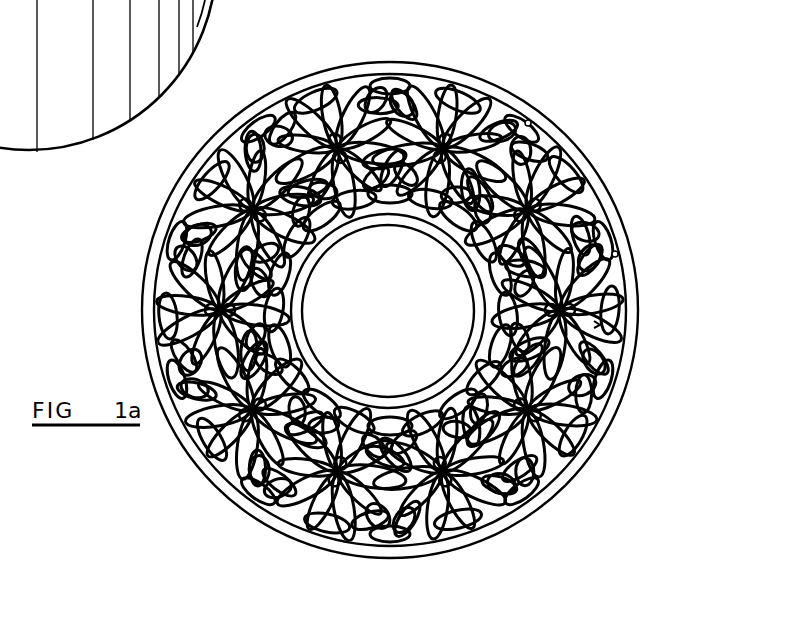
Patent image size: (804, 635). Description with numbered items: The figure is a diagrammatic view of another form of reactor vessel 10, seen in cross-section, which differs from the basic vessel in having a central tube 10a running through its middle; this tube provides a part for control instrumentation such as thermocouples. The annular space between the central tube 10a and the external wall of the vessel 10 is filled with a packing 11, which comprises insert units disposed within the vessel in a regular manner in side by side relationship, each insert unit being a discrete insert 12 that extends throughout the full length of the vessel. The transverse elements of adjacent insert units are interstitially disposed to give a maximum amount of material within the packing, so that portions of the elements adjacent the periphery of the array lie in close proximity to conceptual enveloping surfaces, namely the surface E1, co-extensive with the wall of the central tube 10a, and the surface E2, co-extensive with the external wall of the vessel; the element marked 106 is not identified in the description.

The reactor vessel 10 is at (620, 402).
The central tube 10a is at (388, 311).
The outer layer 106 is at (616, 252).
The packing 11 is at (597, 323).
The insert 12 is at (318, 90).
The enveloping surface E1 is at (388, 311).
The enveloping surface E2 is at (529, 121).